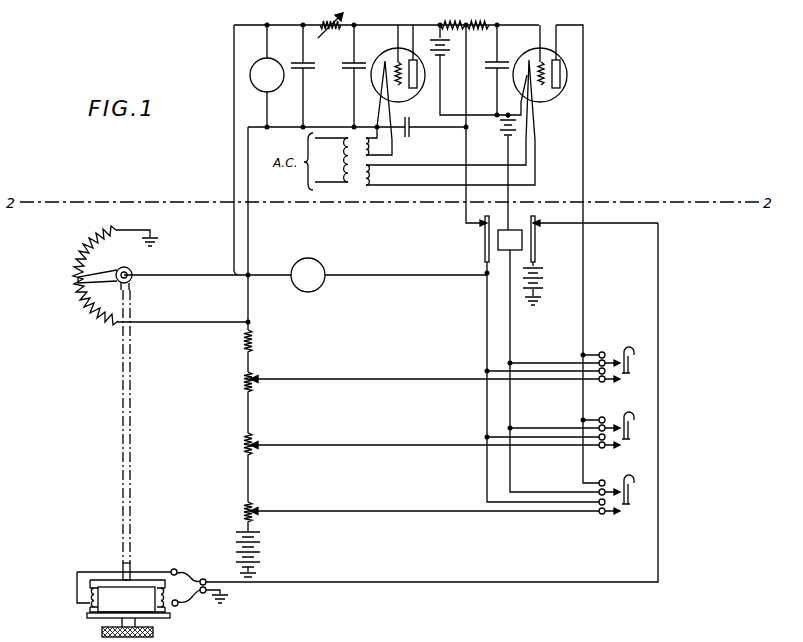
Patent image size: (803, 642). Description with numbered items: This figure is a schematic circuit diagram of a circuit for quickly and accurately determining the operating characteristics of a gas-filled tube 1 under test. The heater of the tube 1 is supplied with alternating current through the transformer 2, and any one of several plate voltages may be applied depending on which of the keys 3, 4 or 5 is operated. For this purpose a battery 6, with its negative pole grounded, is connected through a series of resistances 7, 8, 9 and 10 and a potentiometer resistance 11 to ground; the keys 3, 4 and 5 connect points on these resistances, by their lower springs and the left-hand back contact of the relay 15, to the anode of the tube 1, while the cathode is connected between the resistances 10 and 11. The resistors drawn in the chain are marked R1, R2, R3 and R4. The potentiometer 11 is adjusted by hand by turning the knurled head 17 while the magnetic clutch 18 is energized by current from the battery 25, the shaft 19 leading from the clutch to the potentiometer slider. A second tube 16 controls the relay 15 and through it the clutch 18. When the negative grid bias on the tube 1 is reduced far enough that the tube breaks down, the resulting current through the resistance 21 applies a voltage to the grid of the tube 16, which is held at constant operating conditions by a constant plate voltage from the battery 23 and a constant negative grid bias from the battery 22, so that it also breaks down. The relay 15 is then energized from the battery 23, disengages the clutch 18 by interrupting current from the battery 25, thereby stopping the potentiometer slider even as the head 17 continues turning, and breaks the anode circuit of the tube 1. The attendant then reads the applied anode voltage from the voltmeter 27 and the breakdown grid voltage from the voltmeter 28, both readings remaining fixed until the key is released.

The gas-filled tube 1 is at (405, 95).
The transformer 2 is at (358, 187).
The key 3 is at (625, 352).
The key 4 is at (625, 417).
The key 5 is at (625, 481).
The battery 6 is at (264, 553).
The resistance 7 is at (243, 511).
The resistance 8 is at (243, 446).
The resistance 9 is at (243, 380).
The resistance 10 is at (243, 343).
The potentiometer resistance 11 is at (78, 266).
The relay 15 is at (498, 242).
The second tube 16 is at (545, 98).
The knurled head 17 is at (150, 637).
The magnetic clutch 18 is at (88, 608).
The shaft 19 is at (128, 508).
The resistance 21 is at (446, 20).
The battery 22 is at (455, 50).
The battery 23 is at (502, 133).
The battery 25 is at (545, 278).
The voltmeter 27 is at (322, 268).
The voltmeter 28 is at (262, 30).
The resistor R1 is at (256, 344).
The resistor R2 is at (255, 375).
The resistor R3 is at (254, 436).
The resistor R4 is at (255, 504).